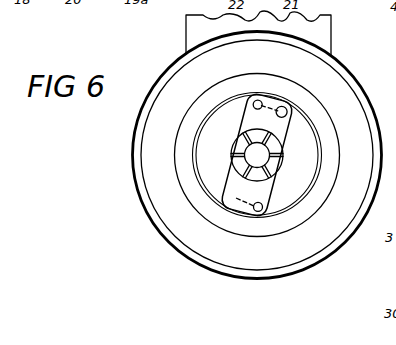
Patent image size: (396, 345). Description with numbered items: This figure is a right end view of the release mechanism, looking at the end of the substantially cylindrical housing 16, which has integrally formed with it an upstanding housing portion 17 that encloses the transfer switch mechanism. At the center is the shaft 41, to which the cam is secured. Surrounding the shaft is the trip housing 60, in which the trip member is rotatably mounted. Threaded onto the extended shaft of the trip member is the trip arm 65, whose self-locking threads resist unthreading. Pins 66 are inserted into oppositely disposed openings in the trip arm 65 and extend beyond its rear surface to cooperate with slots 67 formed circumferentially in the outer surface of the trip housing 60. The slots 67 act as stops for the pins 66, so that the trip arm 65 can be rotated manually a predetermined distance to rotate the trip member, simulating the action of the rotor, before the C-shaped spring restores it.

The housing 16 is at (144, 205).
The upstanding housing portion 17 is at (328, 38).
The shaft 41 is at (259, 155).
The trip housing 60 is at (303, 221).
The trip arm 65 is at (258, 183).
The pins 66 is at (290, 115).
The slots 67 is at (260, 101).